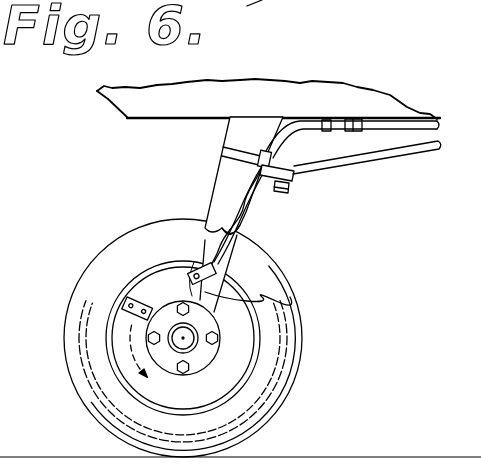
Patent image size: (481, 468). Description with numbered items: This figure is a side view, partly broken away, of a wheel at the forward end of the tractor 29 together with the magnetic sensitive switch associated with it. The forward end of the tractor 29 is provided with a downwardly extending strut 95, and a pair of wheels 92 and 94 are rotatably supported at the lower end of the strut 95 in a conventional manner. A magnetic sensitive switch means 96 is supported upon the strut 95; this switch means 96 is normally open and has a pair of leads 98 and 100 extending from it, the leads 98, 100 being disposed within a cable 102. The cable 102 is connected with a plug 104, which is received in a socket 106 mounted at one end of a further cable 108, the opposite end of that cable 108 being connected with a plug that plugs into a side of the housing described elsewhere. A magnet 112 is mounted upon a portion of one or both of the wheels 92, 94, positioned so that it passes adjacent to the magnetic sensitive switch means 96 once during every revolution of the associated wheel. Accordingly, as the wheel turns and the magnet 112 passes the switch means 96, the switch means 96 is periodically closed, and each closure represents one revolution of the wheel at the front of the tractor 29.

The tractor 29 is at (109, 118).
The wheel 92 is at (285, 246).
The wheel 94 is at (304, 311).
The strut 95 is at (221, 178).
The magnetic sensitive switch means 96 is at (199, 257).
The lead 98 is at (218, 213).
The lead 100 is at (243, 229).
The cable 102 is at (297, 131).
The plug 104 is at (350, 118).
The socket 106 is at (364, 118).
The cable 108 is at (407, 131).
The magnet 112 is at (138, 297).